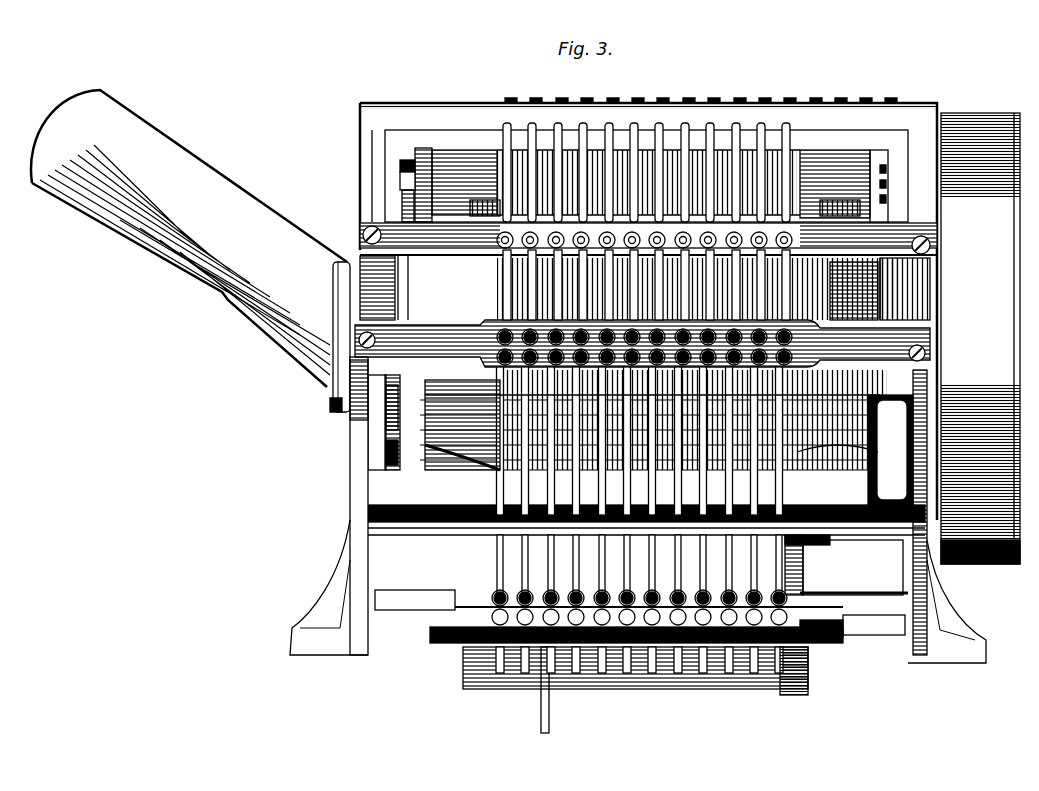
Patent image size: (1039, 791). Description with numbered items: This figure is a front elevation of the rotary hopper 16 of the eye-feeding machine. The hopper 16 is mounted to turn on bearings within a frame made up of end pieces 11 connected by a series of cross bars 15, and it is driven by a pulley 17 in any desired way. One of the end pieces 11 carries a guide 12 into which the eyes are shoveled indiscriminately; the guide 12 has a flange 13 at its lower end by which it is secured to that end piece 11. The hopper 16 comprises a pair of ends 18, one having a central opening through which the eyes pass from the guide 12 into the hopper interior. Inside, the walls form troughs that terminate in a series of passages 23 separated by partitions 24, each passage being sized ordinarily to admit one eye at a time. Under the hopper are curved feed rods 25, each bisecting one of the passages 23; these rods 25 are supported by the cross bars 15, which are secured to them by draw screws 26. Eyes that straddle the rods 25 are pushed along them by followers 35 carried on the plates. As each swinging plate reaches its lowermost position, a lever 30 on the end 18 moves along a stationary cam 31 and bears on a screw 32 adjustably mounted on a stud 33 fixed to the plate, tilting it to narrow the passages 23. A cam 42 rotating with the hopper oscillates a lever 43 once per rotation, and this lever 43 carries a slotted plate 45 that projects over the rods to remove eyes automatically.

The end pieces 11 is at (350, 565).
The guide 12 is at (166, 145).
The flange 13 is at (338, 418).
The cross bars 15 is at (448, 108).
The rotary hopper 16 is at (812, 155).
The pulley 17 is at (960, 118).
The ends 18 is at (425, 148).
The passages 23 is at (495, 440).
The partitions 24 is at (545, 425).
The feed rods 25 is at (505, 140).
The draw screws 26 is at (697, 104).
The lever 30 is at (398, 210).
The cam 31 is at (395, 420).
The screw 32 is at (400, 165).
The stud 33 is at (398, 185).
The followers 35 is at (812, 215).
The cam 42 is at (835, 328).
The lever 43 is at (805, 578).
The slotted plate 45 is at (700, 694).